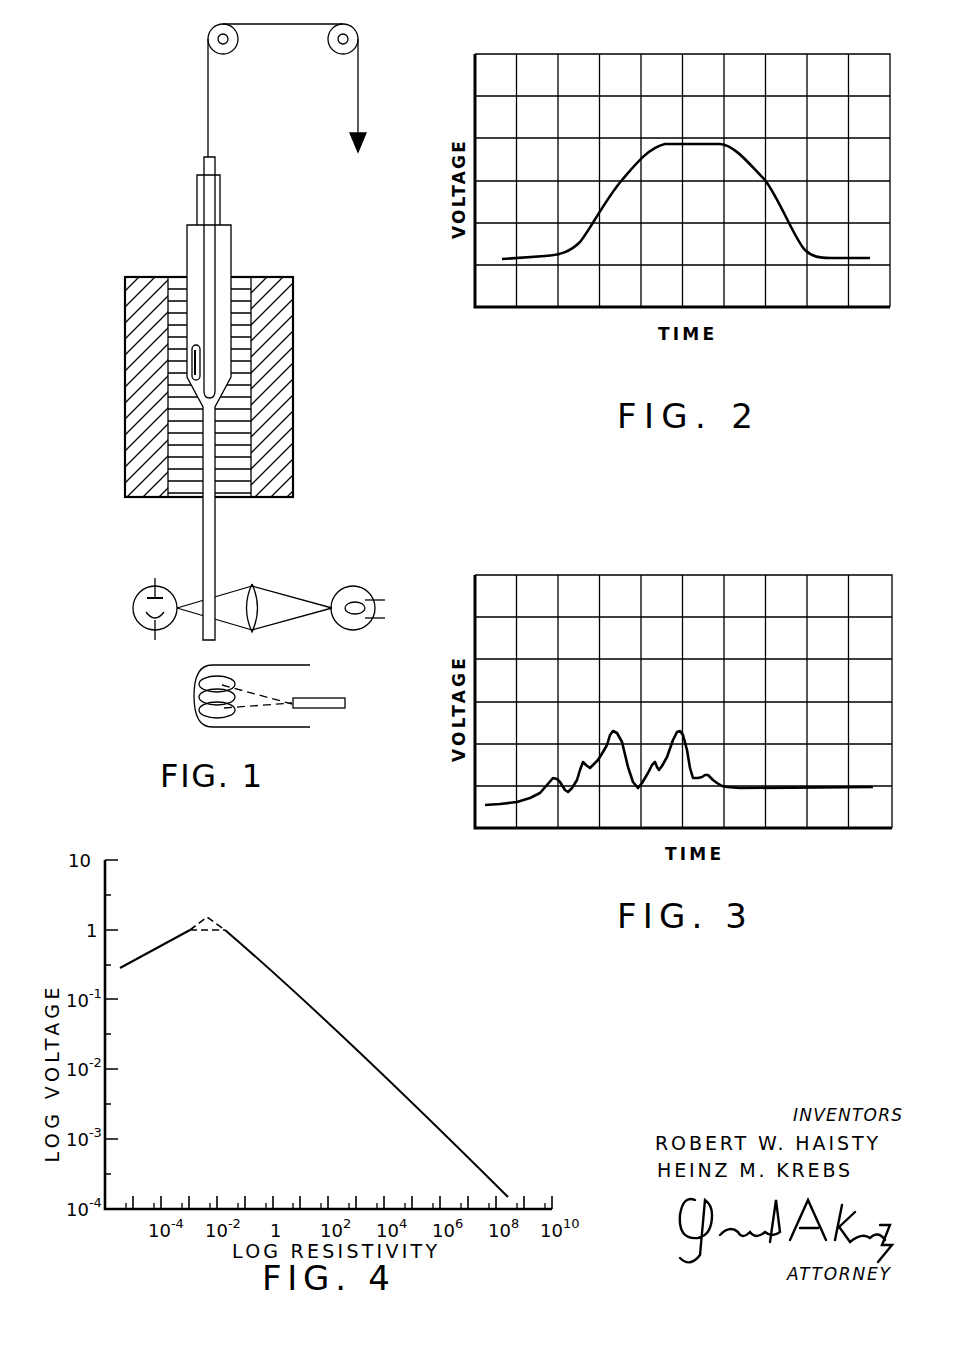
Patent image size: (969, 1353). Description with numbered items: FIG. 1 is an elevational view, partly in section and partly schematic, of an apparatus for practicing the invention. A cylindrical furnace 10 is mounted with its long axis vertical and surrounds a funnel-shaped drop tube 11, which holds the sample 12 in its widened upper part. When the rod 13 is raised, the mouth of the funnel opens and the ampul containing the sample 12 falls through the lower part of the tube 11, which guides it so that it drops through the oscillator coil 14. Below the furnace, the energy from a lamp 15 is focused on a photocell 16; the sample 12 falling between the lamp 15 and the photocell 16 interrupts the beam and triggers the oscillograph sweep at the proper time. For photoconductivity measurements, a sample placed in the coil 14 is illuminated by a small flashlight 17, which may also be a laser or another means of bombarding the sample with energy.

The cylindrical furnace 10 is at (275, 386).
The funnel-shaped drop tube 11 is at (231, 247).
The sample 12 is at (192, 368).
The rod 13 is at (207, 246).
The oscillator coil 14 is at (198, 692).
The lamp 15 is at (352, 584).
The photocell 16 is at (133, 608).
The flashlight 17 is at (338, 702).